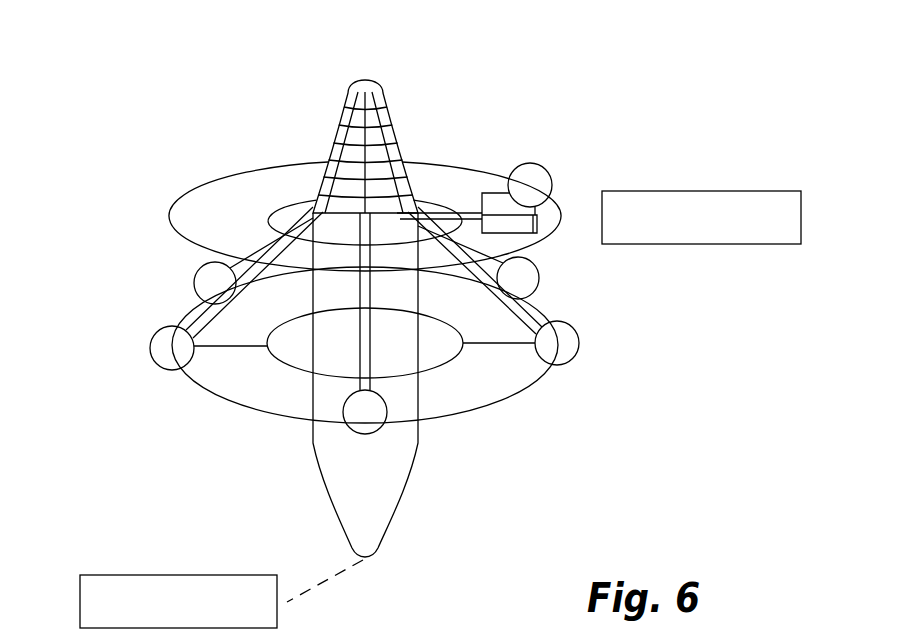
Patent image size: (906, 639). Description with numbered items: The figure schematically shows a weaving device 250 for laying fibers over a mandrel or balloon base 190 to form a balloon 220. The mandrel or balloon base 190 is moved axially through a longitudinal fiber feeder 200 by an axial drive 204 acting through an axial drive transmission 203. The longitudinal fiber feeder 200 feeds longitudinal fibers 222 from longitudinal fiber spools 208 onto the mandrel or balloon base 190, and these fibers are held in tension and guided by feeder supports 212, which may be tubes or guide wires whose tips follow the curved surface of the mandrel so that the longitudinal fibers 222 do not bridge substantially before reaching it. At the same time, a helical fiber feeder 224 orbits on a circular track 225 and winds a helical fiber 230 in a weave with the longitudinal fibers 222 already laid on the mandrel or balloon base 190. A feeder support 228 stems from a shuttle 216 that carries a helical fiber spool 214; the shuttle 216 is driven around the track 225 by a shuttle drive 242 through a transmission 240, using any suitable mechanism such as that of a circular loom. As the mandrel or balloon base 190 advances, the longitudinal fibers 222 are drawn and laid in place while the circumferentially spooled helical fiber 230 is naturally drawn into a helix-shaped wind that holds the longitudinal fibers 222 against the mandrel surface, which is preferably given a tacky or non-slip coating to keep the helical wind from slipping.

The mandrel or balloon base 190 is at (330, 497).
The longitudinal fiber feeder 200 is at (133, 347).
The axial drive transmission 203 is at (325, 580).
The axial drive 204 is at (192, 575).
The longitudinal fiber spools 208 is at (160, 373).
The feeder supports 212 is at (187, 313).
The helical fiber spool 214 is at (530, 163).
The shuttle 216 is at (490, 192).
The balloon 220 is at (390, 100).
The longitudinal fibers 222 is at (367, 90).
The helical fiber feeder 224 is at (140, 200).
The track 225 is at (183, 197).
The feeder support 228 is at (440, 210).
The helical fiber 230 is at (345, 200).
The transmission 240 is at (602, 225).
The shuttle drive 242 is at (700, 245).
The weaving device 250 is at (578, 437).